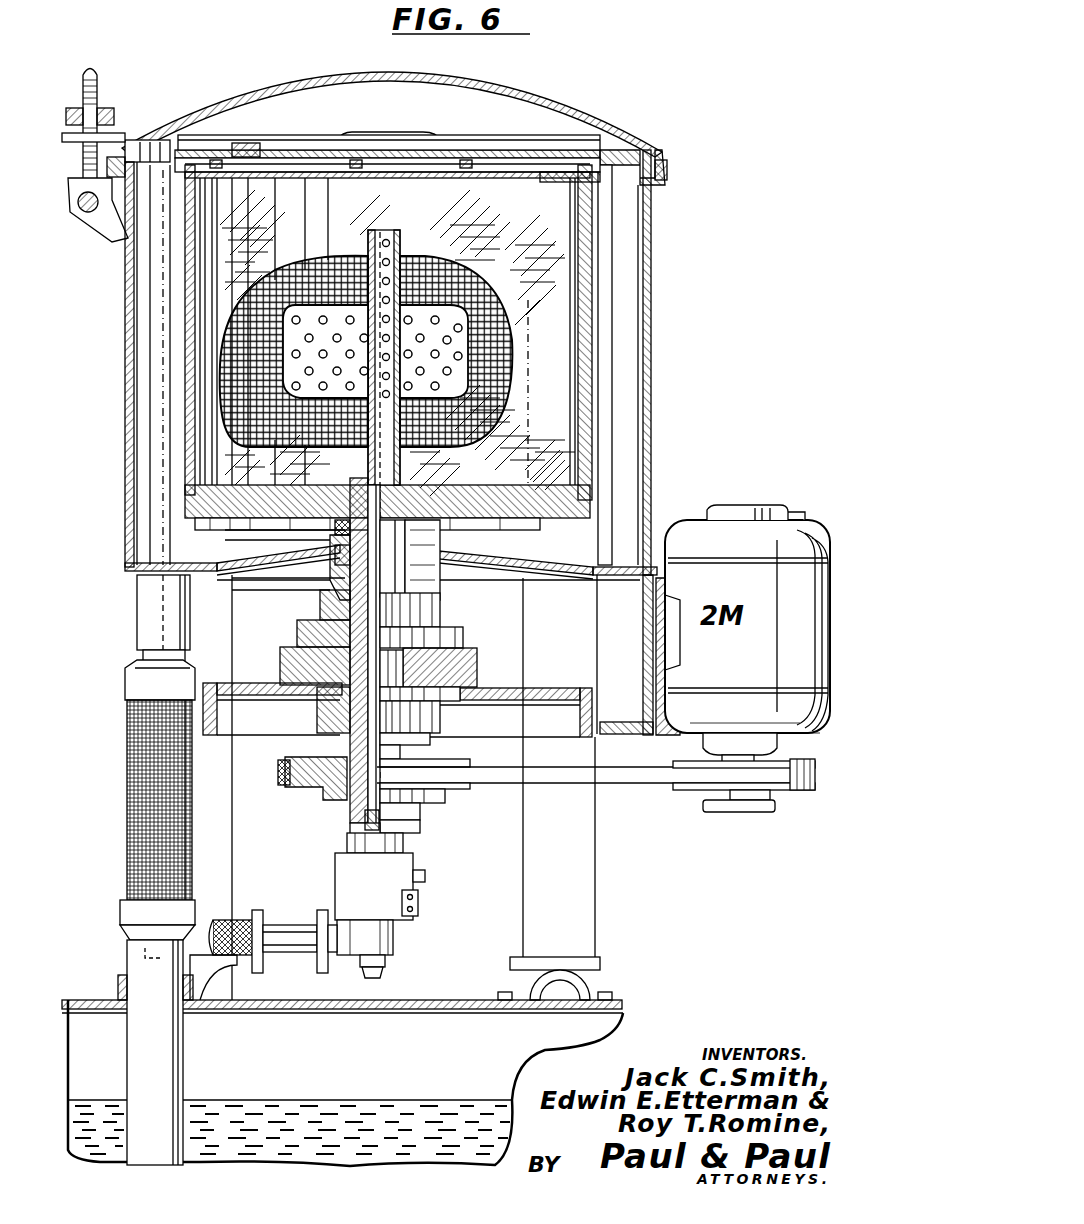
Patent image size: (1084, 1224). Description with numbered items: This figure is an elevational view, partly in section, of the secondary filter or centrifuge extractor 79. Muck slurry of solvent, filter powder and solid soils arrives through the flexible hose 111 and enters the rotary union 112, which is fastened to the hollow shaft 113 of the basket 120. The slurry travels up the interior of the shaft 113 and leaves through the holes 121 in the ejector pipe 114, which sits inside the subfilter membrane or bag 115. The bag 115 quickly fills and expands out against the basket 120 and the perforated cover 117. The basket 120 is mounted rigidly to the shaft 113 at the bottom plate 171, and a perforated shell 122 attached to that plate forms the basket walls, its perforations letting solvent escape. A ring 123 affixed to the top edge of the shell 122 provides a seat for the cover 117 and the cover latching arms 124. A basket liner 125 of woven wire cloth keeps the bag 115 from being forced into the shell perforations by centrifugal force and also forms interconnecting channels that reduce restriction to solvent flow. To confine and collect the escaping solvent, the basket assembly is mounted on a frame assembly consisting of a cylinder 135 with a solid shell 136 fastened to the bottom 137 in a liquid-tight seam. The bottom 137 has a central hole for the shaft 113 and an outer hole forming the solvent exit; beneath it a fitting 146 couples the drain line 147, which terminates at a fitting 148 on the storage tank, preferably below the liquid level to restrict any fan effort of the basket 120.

The outer housing 79 is at (725, 175).
The flexible hose 111 is at (243, 925).
The rotary union 112 is at (380, 905).
The shaft 113 is at (350, 808).
The ejector pipe 114 is at (382, 236).
The subfilter membrane or bag 115 is at (585, 205).
The perforated cover 117 is at (500, 136).
The basket 120 is at (605, 285).
The holes 121 is at (400, 255).
The perforated shell 122 is at (455, 352).
The ring 123 is at (605, 160).
The cover latching arms 124 is at (208, 150).
The basket liner 125 is at (565, 335).
The cylinder 135 is at (124, 372).
The solid shell 136 is at (125, 420).
The bottom 137 is at (215, 570).
The fitting 146 is at (140, 604).
The drain line 147 is at (140, 777).
The fitting 148 is at (140, 975).
The bottom plate 171 is at (505, 507).